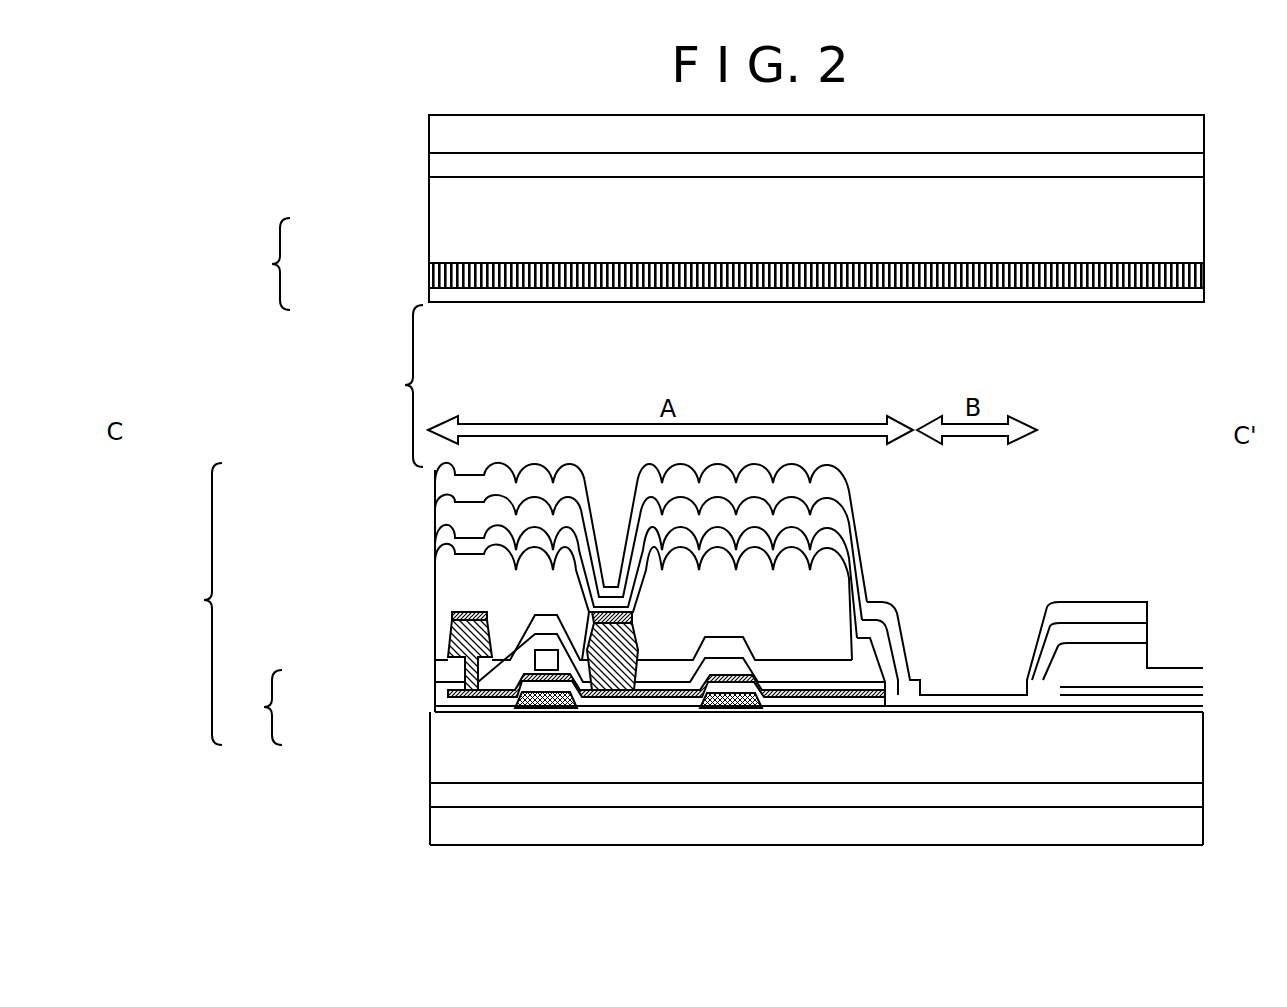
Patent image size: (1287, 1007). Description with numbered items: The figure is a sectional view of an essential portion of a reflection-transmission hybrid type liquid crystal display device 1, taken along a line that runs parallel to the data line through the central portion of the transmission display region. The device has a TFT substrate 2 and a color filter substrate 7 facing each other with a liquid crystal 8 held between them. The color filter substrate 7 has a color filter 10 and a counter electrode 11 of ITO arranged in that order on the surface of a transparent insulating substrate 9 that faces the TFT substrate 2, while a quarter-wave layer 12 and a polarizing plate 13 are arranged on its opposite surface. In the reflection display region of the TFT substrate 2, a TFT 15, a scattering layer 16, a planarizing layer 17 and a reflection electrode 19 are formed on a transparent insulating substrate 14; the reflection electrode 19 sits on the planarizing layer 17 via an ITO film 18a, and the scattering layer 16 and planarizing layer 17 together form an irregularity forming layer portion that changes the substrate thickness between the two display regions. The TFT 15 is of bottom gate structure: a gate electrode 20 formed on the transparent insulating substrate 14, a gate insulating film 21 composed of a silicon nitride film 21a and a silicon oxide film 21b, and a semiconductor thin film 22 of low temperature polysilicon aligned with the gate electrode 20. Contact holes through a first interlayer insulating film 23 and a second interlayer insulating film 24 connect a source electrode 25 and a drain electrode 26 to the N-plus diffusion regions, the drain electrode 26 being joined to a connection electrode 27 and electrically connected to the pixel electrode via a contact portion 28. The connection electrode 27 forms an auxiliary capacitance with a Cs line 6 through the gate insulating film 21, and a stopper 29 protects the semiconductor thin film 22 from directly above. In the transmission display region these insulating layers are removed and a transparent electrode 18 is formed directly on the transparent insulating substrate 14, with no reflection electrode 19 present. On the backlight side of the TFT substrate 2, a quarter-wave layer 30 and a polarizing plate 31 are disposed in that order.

The liquid crystal display device 1 is at (1243, 125).
The TFT substrate 2 is at (197, 604).
The Cs line 6 is at (717, 712).
The color filter substrate 7 is at (265, 264).
The liquid crystal 8 is at (400, 386).
The transparent insulating substrate 9 is at (452, 228).
The color filter 10 is at (429, 278).
The counter electrode 11 is at (437, 292).
The λ/4 layer 12 is at (429, 172).
The polarizing plate 13 is at (429, 135).
The transparent insulating substrate 14 is at (430, 773).
The TFT 15 is at (547, 712).
The scattering layer 16 is at (448, 580).
The planarizing layer 17 is at (445, 546).
The transparent electrode 18 is at (975, 703).
The ITO film 18a is at (445, 513).
The reflection electrode 19 is at (445, 482).
The gate electrode 20 is at (525, 710).
The gate insulating film 21 is at (251, 707).
The silicon nitride film 21a is at (437, 708).
The silicon oxide film 21b is at (437, 700).
The semiconductor thin film 22 is at (618, 703).
The first interlayer insulating film 23 is at (437, 688).
The second interlayer insulating film 24 is at (437, 663).
The source electrode 25 is at (447, 637).
The drain electrode 26 is at (617, 642).
The connection electrode 27 is at (632, 615).
The contact portion 28 is at (616, 522).
The stopper 29 is at (552, 710).
The λ/4 layer 30 is at (430, 803).
The polarizing plate 31 is at (430, 836).